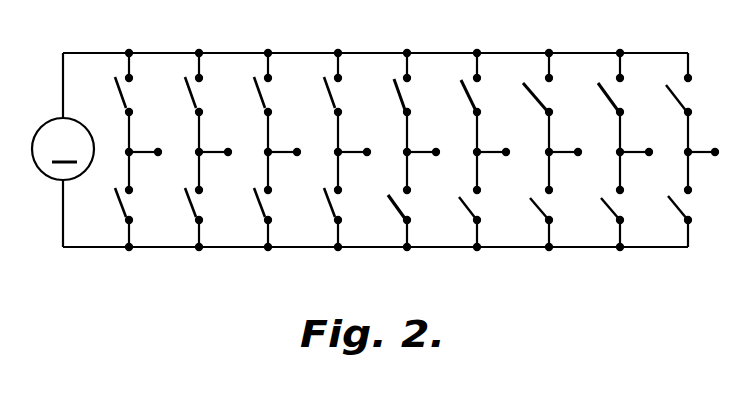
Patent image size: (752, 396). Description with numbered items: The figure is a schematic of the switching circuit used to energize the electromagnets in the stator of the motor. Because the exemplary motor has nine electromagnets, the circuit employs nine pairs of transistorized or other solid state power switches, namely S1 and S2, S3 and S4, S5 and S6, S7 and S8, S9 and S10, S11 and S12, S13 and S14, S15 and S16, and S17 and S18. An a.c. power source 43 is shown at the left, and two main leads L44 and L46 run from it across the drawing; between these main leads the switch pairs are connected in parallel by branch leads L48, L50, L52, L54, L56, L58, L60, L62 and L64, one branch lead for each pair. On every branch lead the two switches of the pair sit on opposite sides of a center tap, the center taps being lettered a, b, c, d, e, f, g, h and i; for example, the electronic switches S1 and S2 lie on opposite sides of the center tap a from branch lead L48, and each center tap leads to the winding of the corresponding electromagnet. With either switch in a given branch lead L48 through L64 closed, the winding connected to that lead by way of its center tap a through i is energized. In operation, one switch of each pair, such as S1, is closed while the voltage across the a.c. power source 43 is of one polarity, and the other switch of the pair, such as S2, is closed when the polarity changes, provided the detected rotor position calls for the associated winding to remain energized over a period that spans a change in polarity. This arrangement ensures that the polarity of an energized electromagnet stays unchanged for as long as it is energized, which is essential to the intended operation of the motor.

The a.c. power source 43 is at (100, 101).
The main lead L44 is at (247, 37).
The main lead L46 is at (348, 250).
The branch lead L48 is at (129, 232).
The branch lead L50 is at (199, 232).
The branch lead L52 is at (268, 232).
The branch lead L54 is at (338, 232).
The branch lead L56 is at (407, 232).
The branch lead L58 is at (477, 232).
The branch lead L60 is at (549, 232).
The branch lead L62 is at (620, 232).
The branch lead L64 is at (688, 232).
The power switch S1 is at (134, 95).
The power switch S2 is at (136, 205).
The power switch S3 is at (206, 95).
The power switch S4 is at (207, 205).
The power switch S5 is at (277, 95).
The power switch S6 is at (277, 205).
The power switch S7 is at (347, 95).
The power switch S8 is at (347, 205).
The power switch S9 is at (417, 95).
The power switch S10 is at (420, 205).
The power switch S11 is at (486, 95).
The power switch S12 is at (490, 205).
The power switch S13 is at (557, 95).
The power switch S14 is at (564, 205).
The power switch S15 is at (630, 95).
The power switch S16 is at (635, 205).
The power switch S17 is at (695, 95).
The power switch S18 is at (703, 205).
The center tap a is at (144, 163).
The center tap b is at (215, 163).
The center tap c is at (283, 163).
The center tap d is at (353, 163).
The center tap e is at (422, 162).
The center tap f is at (492, 163).
The center tap g is at (564, 162).
The center tap h is at (635, 162).
The center tap i is at (702, 162).